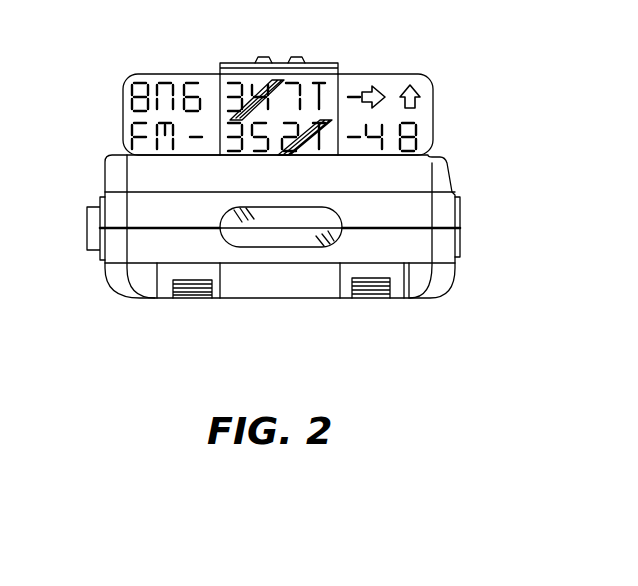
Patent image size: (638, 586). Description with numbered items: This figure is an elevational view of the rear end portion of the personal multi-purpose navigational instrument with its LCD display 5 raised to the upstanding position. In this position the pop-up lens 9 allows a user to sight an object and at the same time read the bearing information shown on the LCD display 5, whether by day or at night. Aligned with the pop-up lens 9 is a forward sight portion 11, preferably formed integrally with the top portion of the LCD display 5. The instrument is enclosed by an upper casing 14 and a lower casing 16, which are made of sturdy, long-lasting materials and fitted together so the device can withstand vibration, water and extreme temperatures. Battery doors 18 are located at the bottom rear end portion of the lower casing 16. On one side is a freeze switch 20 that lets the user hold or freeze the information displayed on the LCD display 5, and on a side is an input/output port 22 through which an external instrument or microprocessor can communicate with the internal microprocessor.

The LCD display 5 is at (152, 84).
The pop-up lens 9 is at (340, 88).
The forward sight portion 11 is at (305, 62).
The upper casing 14 is at (447, 163).
The lower casing 16 is at (128, 290).
The battery doors 18 is at (380, 300).
The freeze switch 20 is at (96, 210).
The input/output port 22 is at (463, 226).